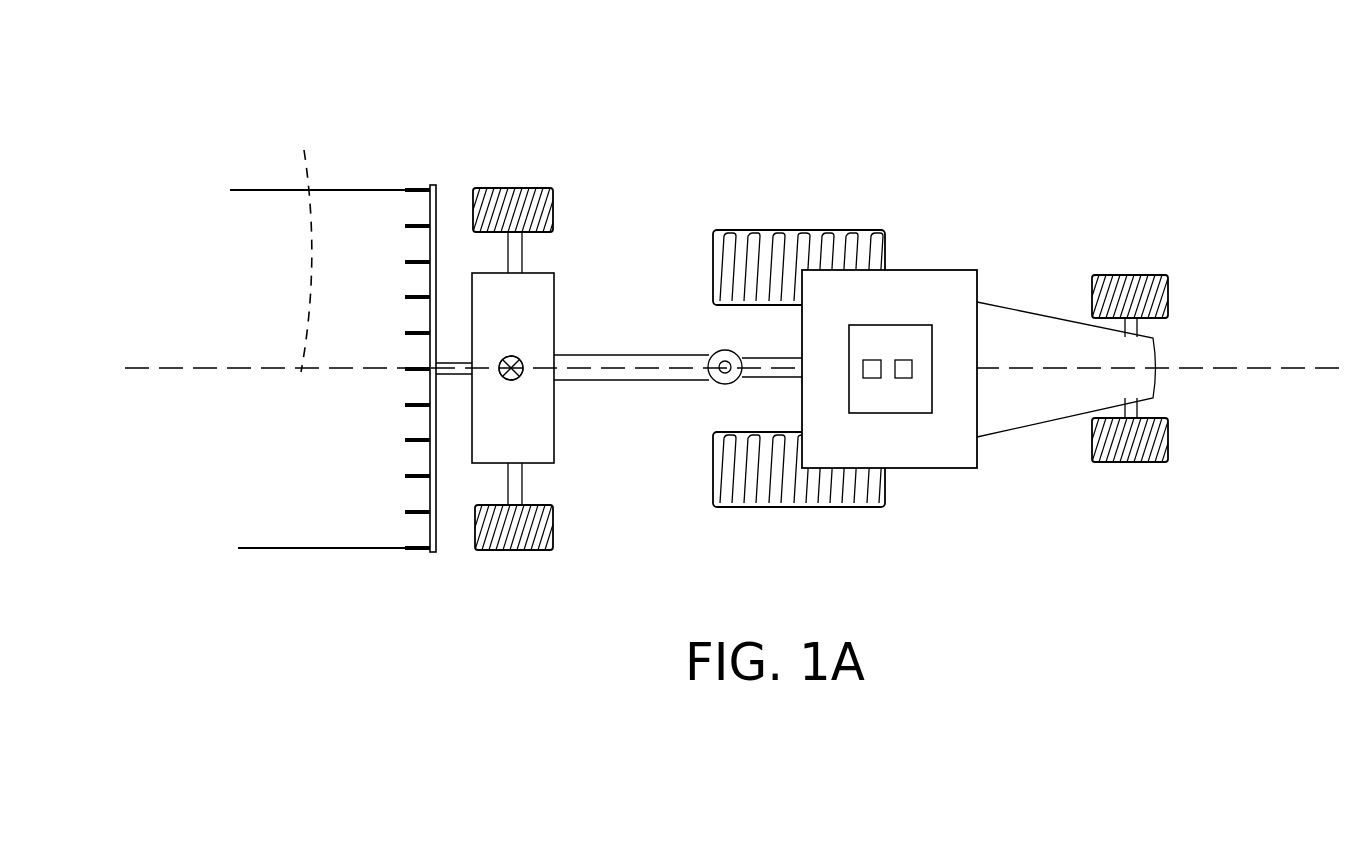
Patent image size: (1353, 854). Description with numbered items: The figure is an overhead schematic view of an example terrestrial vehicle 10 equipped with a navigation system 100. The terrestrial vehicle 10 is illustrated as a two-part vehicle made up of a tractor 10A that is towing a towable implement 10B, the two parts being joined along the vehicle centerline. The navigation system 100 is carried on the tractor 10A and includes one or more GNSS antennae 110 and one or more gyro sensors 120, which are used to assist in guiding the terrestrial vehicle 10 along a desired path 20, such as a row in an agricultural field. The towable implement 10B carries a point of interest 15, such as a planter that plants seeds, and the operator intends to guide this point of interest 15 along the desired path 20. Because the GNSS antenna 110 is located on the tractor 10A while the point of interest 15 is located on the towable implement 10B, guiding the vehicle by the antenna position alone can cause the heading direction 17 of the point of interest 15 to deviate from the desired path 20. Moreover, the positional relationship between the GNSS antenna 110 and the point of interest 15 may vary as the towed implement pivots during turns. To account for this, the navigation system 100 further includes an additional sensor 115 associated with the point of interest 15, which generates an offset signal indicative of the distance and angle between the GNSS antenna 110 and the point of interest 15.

The terrestrial vehicle 10 is at (703, 324).
The tractor 10A is at (987, 200).
The towable implement 10B is at (525, 138).
The point of interest 15 is at (534, 352).
The heading direction 17 is at (630, 368).
The desired path 20 is at (306, 160).
The navigation system 100 is at (913, 322).
The GNSS antenna 110 is at (907, 372).
The sensor 115 is at (517, 380).
The gyro sensor 120 is at (870, 372).